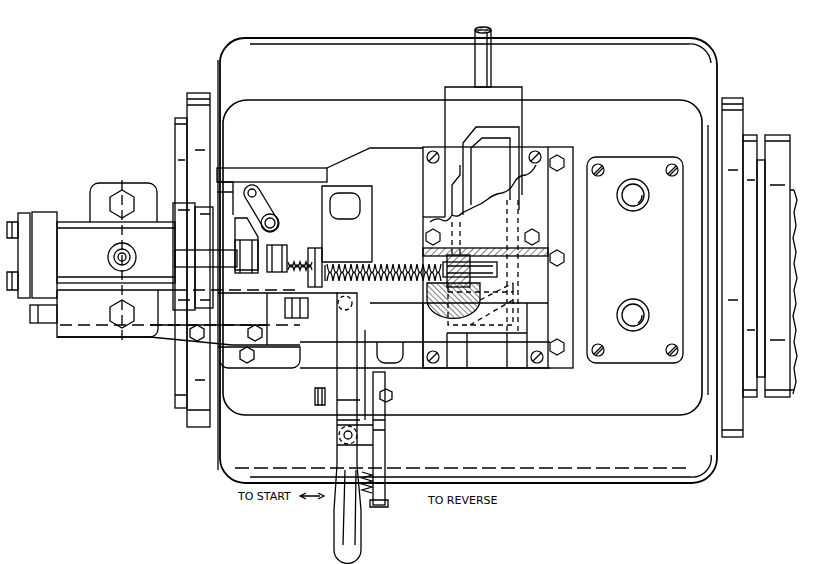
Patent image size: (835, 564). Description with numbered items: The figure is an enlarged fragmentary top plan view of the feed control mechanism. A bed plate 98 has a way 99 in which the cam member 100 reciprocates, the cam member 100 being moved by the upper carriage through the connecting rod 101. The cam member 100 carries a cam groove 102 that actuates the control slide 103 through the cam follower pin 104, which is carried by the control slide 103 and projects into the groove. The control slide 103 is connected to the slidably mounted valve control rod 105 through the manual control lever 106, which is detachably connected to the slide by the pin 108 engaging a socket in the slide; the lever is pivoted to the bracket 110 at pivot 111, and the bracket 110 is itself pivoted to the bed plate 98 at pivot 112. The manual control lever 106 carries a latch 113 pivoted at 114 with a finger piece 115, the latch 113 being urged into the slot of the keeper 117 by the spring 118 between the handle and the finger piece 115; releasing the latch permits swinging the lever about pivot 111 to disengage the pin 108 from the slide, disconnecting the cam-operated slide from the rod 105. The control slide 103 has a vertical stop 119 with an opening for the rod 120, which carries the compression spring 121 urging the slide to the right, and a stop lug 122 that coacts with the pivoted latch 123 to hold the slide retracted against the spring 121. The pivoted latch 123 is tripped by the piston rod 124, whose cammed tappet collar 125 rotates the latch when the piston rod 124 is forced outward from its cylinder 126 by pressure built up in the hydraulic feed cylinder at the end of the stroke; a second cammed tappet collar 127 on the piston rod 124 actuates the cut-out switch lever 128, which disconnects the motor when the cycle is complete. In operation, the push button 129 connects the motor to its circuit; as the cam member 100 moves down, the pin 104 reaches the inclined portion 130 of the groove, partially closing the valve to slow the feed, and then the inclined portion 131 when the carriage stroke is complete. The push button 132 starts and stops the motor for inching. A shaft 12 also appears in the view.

The shaft 12 is at (337, 310).
The bed plate 98 is at (612, 150).
The way 99 is at (548, 150).
The cam member 100 is at (520, 97).
The connecting rod 101 is at (491, 34).
The cam groove 102 is at (462, 153).
The control slide 103 is at (405, 322).
The cam follower pin 104 is at (488, 325).
The valve control rod 105 is at (43, 323).
The manual control lever 106 is at (355, 550).
The pin 108 is at (352, 303).
The bracket 110 is at (365, 240).
The pivot 111 is at (315, 396).
The pivot 112 is at (358, 205).
The latch 113 is at (385, 430).
The pivot 114 is at (343, 436).
The finger piece 115 is at (386, 505).
The keeper 117 is at (388, 390).
The spring 118 is at (372, 480).
The vertical stop 119 is at (470, 262).
The rod 120 is at (492, 265).
The compression spring 121 is at (342, 262).
The stop lug 122 is at (298, 312).
The pivoted latch 123 is at (314, 250).
The piston rod 124 is at (220, 255).
The cammed tappet collar 125 is at (300, 182).
The cylinder 126 is at (75, 238).
The cammed tappet collar 127 is at (238, 225).
The cut-out switch lever 128 is at (268, 215).
The push button 129 is at (633, 200).
The inclined portion 130 is at (458, 195).
The inclined portion 131 is at (472, 130).
The push button 132 is at (633, 310).